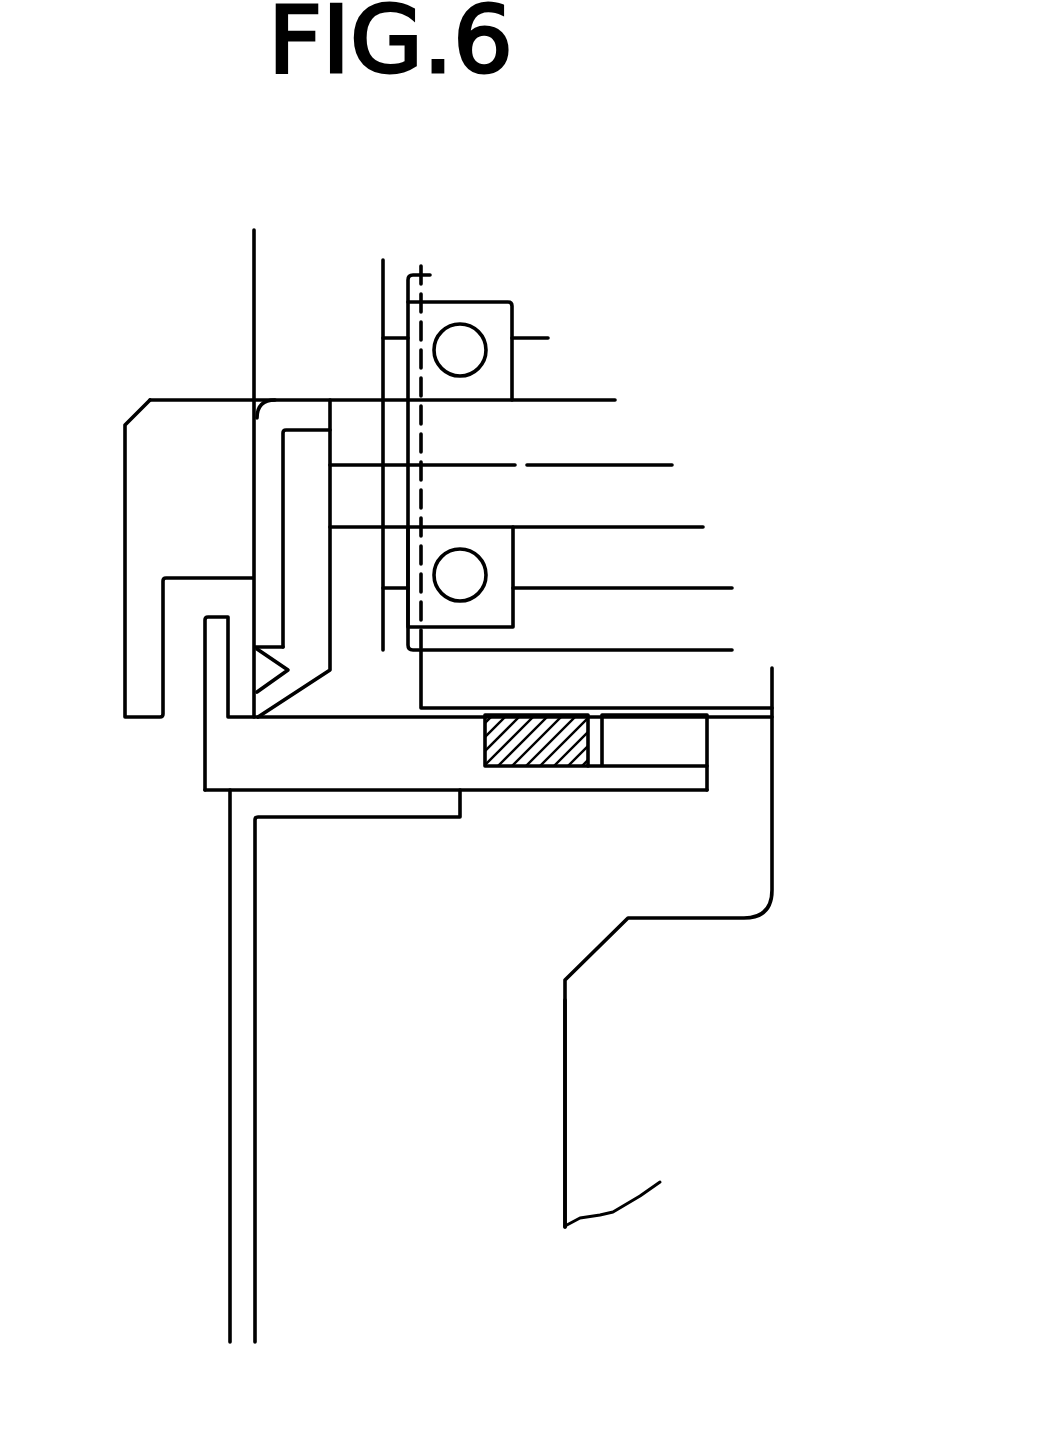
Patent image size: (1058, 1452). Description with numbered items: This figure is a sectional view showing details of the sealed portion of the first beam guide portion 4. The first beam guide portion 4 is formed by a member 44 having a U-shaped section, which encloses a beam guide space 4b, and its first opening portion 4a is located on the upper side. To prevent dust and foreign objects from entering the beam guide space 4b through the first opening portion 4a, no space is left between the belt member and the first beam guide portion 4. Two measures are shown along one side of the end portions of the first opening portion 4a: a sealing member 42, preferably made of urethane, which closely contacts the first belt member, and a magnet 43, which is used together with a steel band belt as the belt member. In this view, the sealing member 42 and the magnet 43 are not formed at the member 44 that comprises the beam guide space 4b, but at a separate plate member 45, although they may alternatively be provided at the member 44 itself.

The first beam guide portion 4 is at (228, 1197).
The first opening portion 4a is at (707, 775).
The beam guide space 4b is at (418, 1124).
The sealing member 42 is at (543, 766).
The magnet 43 is at (652, 766).
The member comprising beam guide space 44 is at (228, 945).
The plate member 45 is at (220, 760).